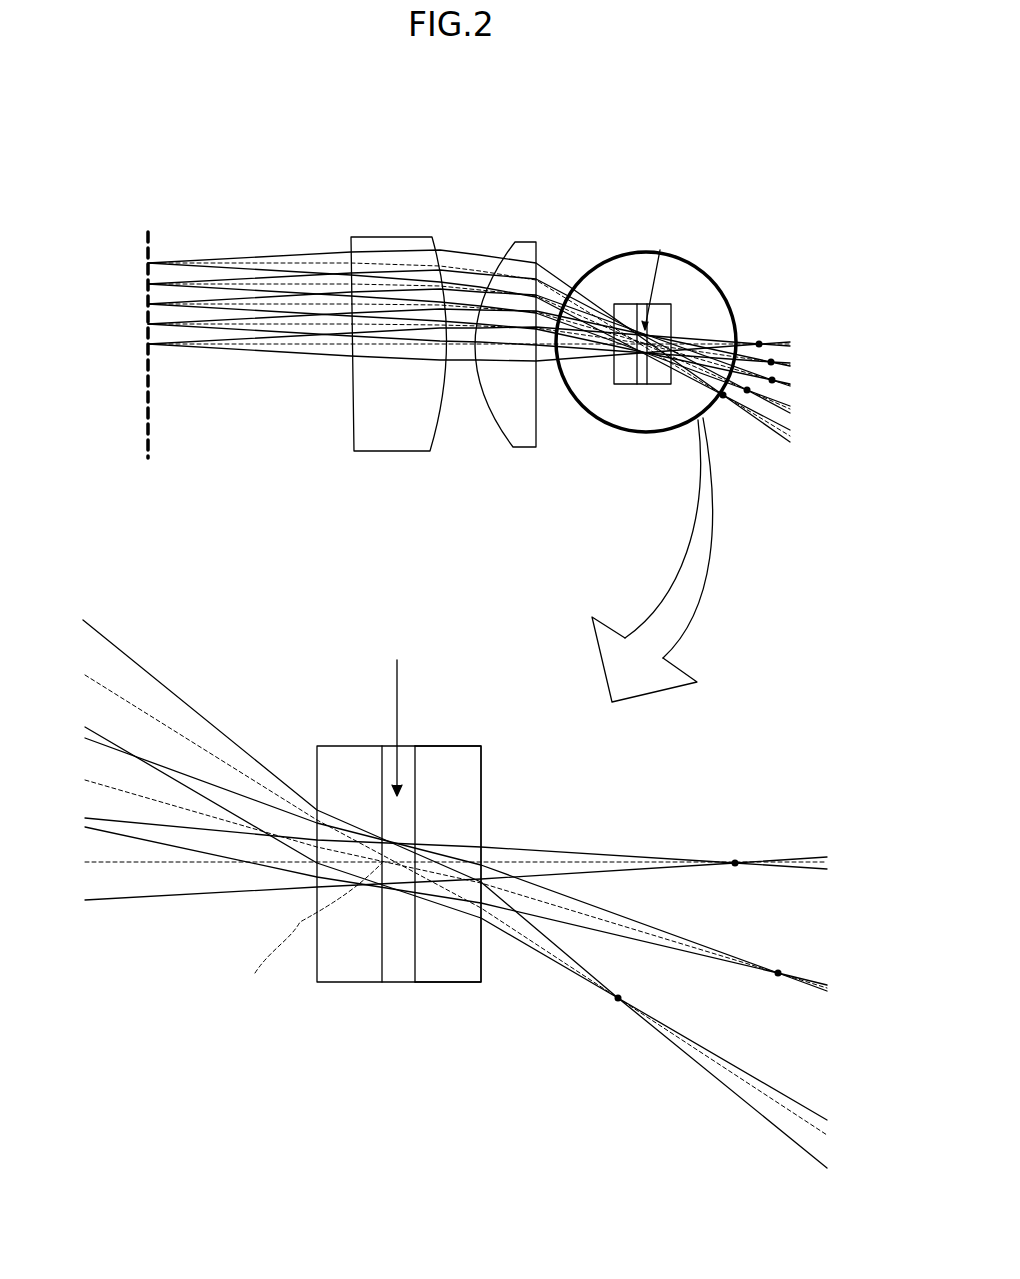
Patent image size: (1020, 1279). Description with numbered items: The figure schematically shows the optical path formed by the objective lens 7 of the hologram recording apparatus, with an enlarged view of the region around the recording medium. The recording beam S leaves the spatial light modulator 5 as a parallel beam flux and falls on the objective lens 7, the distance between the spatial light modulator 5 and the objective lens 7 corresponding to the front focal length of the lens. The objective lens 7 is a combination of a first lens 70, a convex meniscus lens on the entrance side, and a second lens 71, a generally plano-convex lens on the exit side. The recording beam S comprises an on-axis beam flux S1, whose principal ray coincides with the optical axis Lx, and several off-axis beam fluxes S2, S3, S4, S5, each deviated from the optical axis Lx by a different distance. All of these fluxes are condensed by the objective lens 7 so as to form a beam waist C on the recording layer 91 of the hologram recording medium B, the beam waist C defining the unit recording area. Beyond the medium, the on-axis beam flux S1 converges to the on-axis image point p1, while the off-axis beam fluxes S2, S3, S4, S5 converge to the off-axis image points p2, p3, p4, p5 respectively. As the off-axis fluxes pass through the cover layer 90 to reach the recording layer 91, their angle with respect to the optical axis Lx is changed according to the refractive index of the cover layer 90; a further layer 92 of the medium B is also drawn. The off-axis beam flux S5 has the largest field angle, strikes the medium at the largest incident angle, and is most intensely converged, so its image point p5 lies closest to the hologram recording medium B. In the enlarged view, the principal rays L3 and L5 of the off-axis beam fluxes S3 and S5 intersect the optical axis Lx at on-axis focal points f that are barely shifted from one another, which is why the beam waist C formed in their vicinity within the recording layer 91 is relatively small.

The spatial light modulator 5 is at (147, 232).
The objective lens 7 is at (452, 203).
The first lens 70 is at (396, 237).
The second lens 71 is at (527, 242).
The recording beam S is at (239, 245).
The on-axis beam flux S1 is at (295, 353).
The off-axis beam flux S2 is at (243, 333).
The off-axis beam flux S3 is at (222, 310).
The off-axis beam flux S4 is at (212, 290).
The off-axis beam flux S5 is at (188, 262).
The optical axis Lx is at (284, 342).
The principal ray L3 is at (118, 792).
The principal ray L5 is at (130, 705).
The hologram recording medium B is at (620, 303).
The beam waist C is at (660, 250).
The on-axis focal points f is at (312, 931).
The cover layer 90 is at (445, 983).
The recording layer 91 is at (400, 983).
The second layer of block 92 is at (347, 983).
The on-axis image point p1 is at (759, 344).
The off-axis image point p2 is at (772, 362).
The off-axis image point p3 is at (773, 380).
The off-axis image point p4 is at (748, 391).
The off-axis image point p5 is at (723, 396).